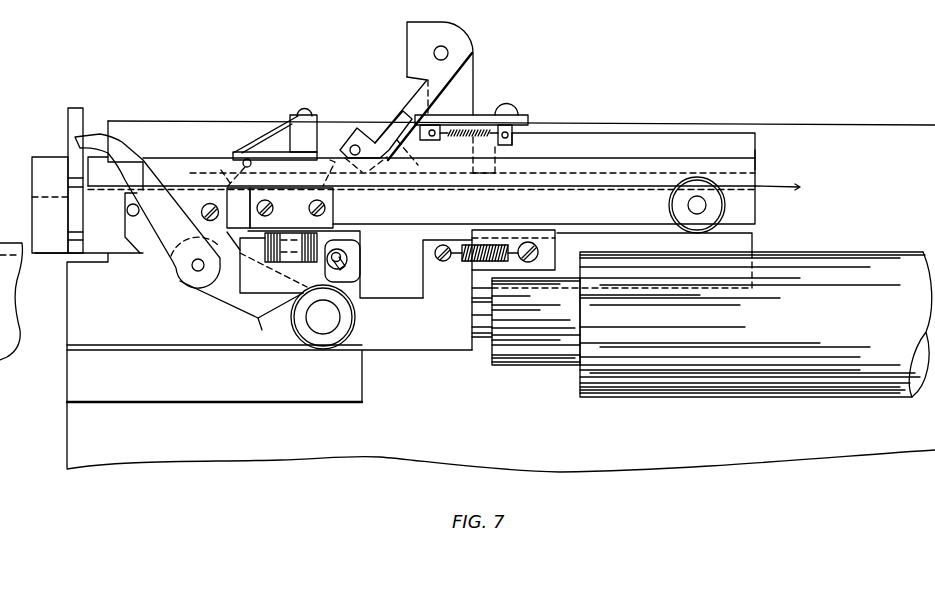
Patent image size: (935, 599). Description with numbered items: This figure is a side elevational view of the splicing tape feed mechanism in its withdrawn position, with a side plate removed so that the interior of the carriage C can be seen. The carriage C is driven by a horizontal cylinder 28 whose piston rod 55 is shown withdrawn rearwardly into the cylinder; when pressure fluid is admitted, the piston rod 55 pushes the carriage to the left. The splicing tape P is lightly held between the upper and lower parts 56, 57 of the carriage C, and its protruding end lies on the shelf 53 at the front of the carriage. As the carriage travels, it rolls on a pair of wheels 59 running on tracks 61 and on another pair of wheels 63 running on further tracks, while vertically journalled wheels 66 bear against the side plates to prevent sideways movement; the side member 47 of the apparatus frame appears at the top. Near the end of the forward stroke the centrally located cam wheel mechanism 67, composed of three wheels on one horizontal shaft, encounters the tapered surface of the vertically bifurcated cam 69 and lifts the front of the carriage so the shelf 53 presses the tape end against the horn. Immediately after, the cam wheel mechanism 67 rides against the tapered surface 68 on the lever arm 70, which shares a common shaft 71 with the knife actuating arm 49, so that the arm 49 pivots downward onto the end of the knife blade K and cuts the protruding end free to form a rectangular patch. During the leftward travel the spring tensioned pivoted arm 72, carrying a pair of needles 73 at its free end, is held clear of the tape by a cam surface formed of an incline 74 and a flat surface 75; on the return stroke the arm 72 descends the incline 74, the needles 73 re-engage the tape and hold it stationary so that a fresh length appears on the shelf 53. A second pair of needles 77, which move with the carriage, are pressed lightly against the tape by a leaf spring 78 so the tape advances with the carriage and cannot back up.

The horizontal cylinder 28 is at (857, 321).
The side member 47 is at (872, 139).
The knife actuating arm 49 is at (128, 158).
The shelf 53 is at (43, 222).
The piston rod 55 is at (487, 333).
The upper part of carriage 56 is at (694, 165).
The lower part of carriage 57 is at (746, 205).
The wheels 59 is at (714, 212).
The tracks 61 is at (620, 233).
The wheels 63 is at (358, 322).
The vertically journalled wheels 66 is at (352, 242).
The cam wheel mechanism 67 is at (340, 343).
The tapered surface 68 is at (269, 313).
The vertically bifurcated cam 69 is at (355, 264).
The lever arm 70 is at (216, 292).
The common shaft 71 is at (192, 267).
The spring tensioned pivoted arm 72 is at (408, 109).
The needles 73 is at (330, 160).
The incline 74 is at (406, 150).
The flat surface 75 is at (550, 158).
The second pair of needles 77 is at (221, 170).
The leaf spring 78 is at (262, 130).
The knife blade K is at (78, 160).
The carriage C is at (750, 167).
The splicing tape P is at (778, 186).